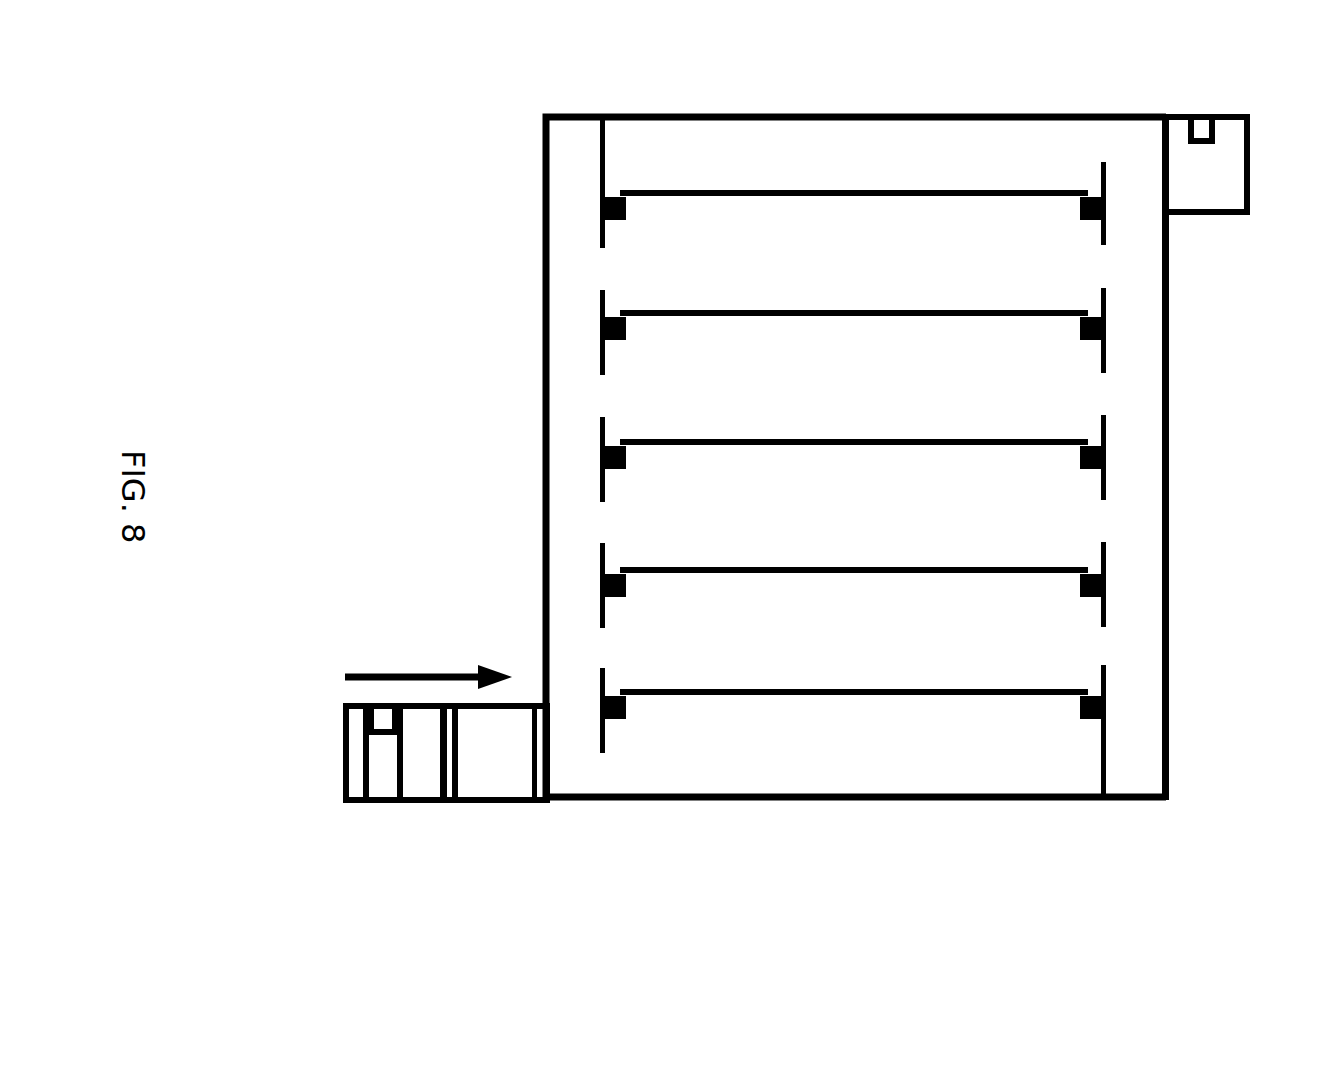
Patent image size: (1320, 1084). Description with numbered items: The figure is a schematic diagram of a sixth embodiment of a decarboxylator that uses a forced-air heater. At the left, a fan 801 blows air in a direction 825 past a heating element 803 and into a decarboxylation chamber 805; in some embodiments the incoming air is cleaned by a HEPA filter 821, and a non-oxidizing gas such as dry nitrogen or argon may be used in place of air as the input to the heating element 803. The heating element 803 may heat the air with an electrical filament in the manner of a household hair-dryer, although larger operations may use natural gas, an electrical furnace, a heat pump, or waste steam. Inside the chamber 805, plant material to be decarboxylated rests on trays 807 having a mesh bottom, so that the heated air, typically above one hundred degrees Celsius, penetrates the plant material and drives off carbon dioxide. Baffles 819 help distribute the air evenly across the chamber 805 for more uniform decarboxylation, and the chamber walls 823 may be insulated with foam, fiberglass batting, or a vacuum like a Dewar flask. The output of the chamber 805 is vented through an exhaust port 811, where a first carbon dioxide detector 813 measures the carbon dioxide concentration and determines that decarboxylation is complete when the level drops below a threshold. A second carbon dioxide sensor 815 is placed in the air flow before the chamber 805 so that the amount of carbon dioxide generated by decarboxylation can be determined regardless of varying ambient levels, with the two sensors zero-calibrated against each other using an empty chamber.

The fan 801 is at (420, 773).
The heating element 803 is at (502, 773).
The decarboxylation chamber 805 is at (862, 400).
The trays 807 is at (873, 567).
The exhaust port 811 is at (1193, 203).
The first carbon dioxide detector 813 is at (1205, 135).
The second carbon dioxide sensor 815 is at (386, 722).
The baffles 819 is at (600, 360).
The HEPA filter 821 is at (356, 722).
The chamber walls 823 is at (1170, 385).
The direction 825 is at (470, 673).